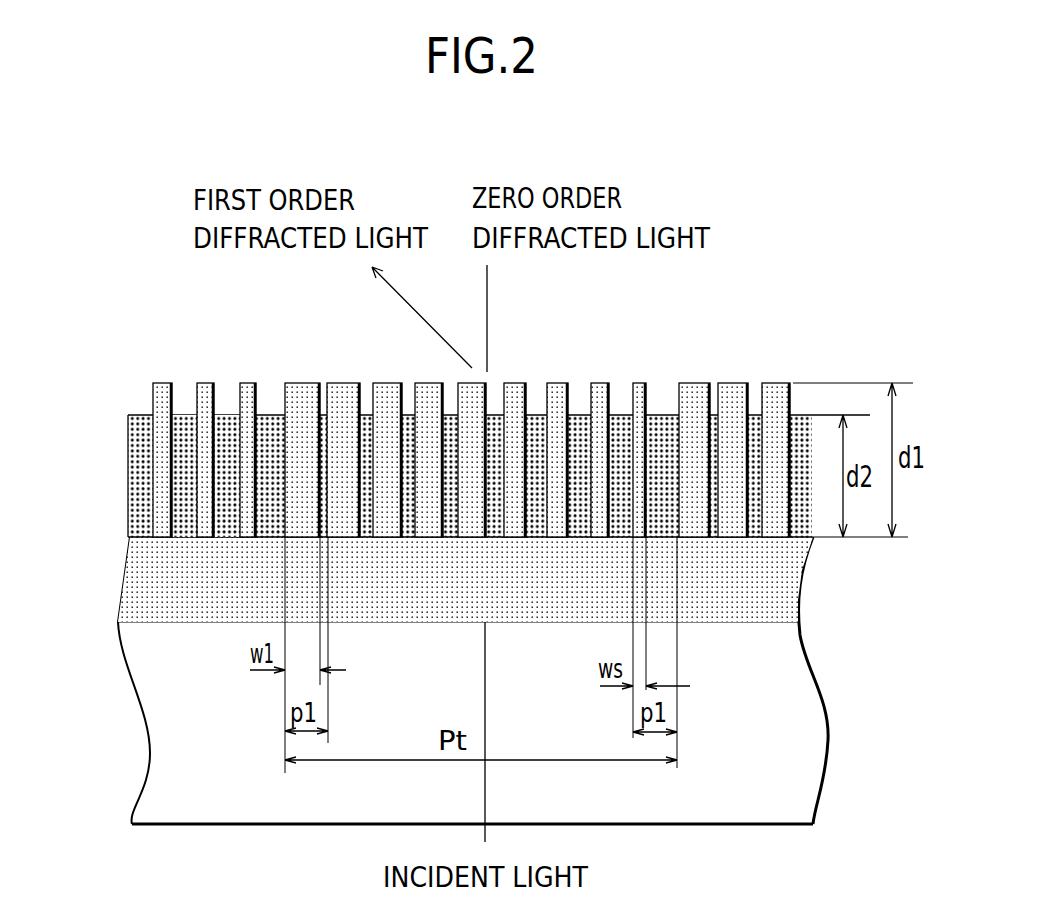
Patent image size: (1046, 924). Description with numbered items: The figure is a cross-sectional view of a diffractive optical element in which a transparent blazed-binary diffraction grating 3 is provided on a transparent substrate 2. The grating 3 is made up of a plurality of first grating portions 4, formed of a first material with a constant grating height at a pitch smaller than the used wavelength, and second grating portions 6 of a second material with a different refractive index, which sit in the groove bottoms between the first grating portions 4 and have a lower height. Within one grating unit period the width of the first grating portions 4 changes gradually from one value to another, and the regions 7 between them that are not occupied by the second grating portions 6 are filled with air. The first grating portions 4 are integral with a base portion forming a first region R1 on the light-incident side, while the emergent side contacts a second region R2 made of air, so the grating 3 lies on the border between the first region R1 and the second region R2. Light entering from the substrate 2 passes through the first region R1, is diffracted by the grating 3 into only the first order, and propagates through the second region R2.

The substrate 2 is at (818, 727).
The blazed-binary diffraction grating 3 is at (461, 431).
The first grating portions 4 is at (245, 383).
The second grating portions 6 is at (185, 398).
The filling portion 7 is at (224, 403).
The first region R1 is at (790, 578).
The second region R2 is at (461, 412).